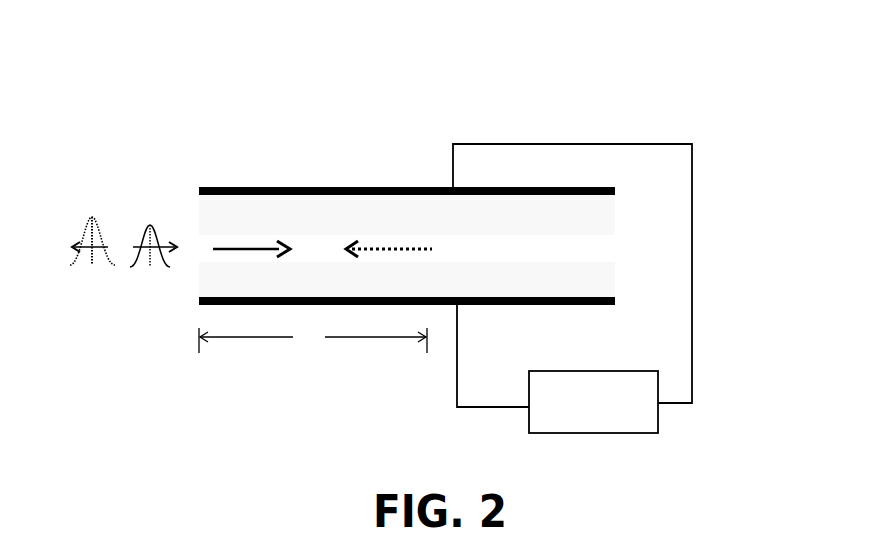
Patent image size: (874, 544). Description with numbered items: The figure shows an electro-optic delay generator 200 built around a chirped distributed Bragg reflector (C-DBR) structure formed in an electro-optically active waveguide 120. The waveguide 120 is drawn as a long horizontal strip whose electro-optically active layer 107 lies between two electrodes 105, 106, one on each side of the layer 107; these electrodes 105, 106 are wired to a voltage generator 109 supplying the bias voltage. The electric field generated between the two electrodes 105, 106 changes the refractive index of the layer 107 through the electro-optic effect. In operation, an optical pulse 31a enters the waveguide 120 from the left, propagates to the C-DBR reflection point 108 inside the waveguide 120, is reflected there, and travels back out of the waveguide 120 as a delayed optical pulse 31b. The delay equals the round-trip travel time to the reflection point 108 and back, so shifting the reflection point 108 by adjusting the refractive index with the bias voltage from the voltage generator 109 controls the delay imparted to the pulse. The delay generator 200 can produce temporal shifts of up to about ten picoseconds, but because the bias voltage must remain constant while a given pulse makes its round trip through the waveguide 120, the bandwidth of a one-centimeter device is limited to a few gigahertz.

The delay generator 200 is at (420, 32).
The electro-optically active waveguide 120 is at (216, 156).
The electro-optically active layer 107 is at (335, 212).
The C-DBR reflection point 108 is at (413, 230).
The electrode 105 is at (445, 187).
The electrode 106 is at (441, 305).
The voltage generator 109 is at (657, 420).
The optical pulse 31a is at (150, 222).
The delayed optical pulse 31b is at (115, 267).